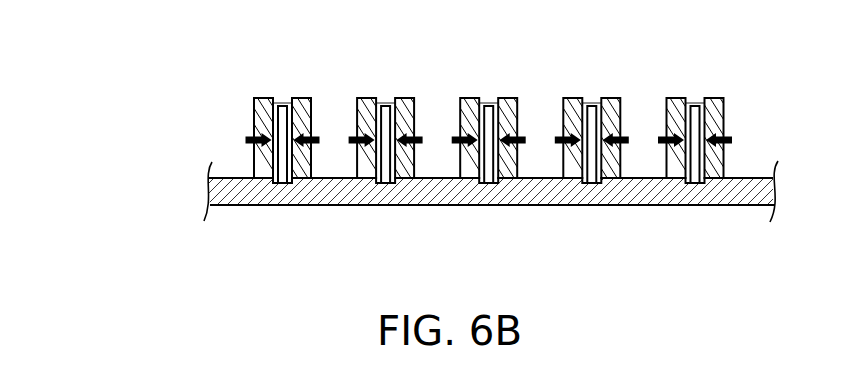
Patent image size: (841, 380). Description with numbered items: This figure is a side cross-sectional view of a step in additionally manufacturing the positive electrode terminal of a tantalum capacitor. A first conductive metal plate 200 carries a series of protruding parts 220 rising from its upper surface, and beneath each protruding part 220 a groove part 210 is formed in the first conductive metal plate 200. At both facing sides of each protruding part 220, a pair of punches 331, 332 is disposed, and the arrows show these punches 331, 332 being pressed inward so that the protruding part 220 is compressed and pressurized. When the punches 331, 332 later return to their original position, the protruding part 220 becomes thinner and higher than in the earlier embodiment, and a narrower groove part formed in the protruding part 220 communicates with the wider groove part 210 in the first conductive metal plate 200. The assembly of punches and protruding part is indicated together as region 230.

The first conductive metal plate 200 is at (471, 209).
The groove part 210 is at (282, 193).
The protruding part 220 is at (280, 103).
The electrode structure 230 is at (263, 95).
The punch 331 is at (299, 95).
The punch 332 is at (304, 95).